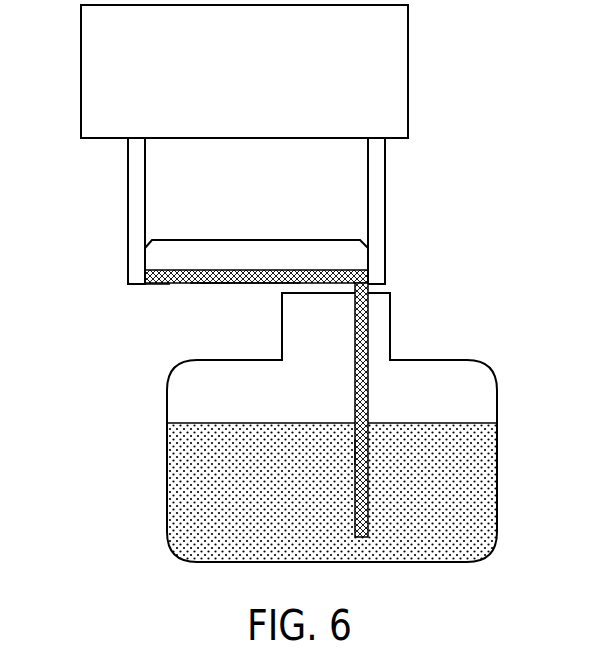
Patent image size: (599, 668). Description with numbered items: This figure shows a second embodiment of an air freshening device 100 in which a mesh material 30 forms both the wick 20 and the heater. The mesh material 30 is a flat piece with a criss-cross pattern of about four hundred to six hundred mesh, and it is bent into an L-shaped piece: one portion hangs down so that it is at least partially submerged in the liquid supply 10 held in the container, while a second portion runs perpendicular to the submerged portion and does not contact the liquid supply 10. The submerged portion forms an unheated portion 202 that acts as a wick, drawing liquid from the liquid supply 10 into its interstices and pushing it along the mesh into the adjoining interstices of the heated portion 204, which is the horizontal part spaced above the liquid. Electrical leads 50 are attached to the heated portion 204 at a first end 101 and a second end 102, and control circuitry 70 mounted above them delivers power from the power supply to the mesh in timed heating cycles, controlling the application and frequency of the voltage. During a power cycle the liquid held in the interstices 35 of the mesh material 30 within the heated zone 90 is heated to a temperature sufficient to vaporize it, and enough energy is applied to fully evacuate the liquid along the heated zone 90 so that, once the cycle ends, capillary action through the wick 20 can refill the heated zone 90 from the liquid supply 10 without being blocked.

The liquid supply 10 is at (472, 483).
The wick 20 is at (376, 390).
The mesh material 30 is at (176, 293).
The interstices 35 is at (247, 287).
The electrical leads 50 is at (128, 172).
The control circuitry 70 is at (393, 43).
The heated zone 90 is at (263, 240).
The air freshening device 100 is at (263, 144).
The first end 101 is at (155, 284).
The second end 102 is at (346, 268).
The unheated portion 202 is at (368, 452).
The heated portion 204 is at (215, 285).